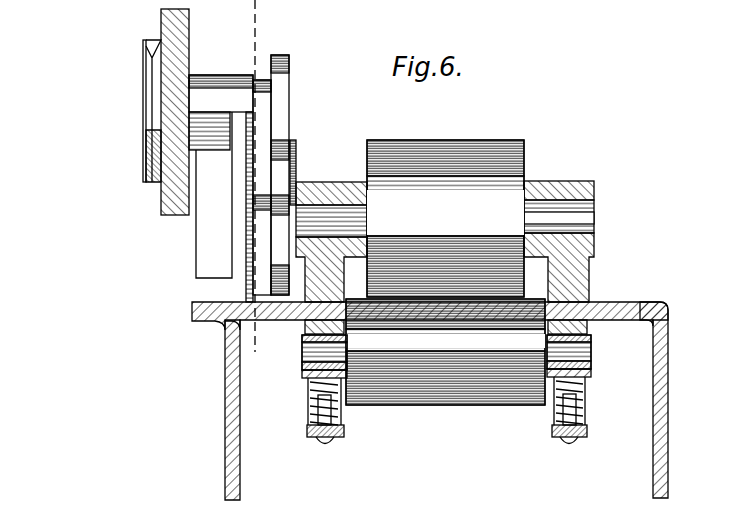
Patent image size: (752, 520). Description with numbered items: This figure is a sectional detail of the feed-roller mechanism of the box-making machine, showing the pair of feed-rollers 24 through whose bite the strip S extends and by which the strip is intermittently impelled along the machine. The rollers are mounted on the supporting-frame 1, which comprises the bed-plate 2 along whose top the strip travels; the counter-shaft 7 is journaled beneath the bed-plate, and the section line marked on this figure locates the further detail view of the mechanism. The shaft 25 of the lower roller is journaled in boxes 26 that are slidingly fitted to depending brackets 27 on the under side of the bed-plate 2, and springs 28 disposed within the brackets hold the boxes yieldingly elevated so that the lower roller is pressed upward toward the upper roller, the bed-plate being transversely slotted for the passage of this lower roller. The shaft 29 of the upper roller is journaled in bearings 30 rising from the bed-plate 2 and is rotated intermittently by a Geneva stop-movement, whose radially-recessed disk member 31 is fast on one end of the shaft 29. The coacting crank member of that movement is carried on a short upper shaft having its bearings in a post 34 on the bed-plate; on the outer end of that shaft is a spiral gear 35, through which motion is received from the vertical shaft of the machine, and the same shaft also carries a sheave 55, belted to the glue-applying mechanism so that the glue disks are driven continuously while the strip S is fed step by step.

The supporting-frame 1 is at (656, 393).
The bed-plate 2 is at (617, 303).
The counter-shaft 7 is at (254, 188).
The feed-rollers 24 is at (441, 140).
The shaft of the lower roller 25 is at (580, 356).
The boxes 26 is at (303, 377).
The depending brackets 27 is at (345, 430).
The springs 28 is at (308, 417).
The shaft of the upper roller 29 is at (585, 215).
The bearings 30 is at (330, 182).
The radially-recessed disk member 31 is at (272, 270).
The post 34 is at (207, 237).
The spiral gear 35 is at (162, 27).
The sheave 55 is at (150, 101).
The strip S is at (364, 300).